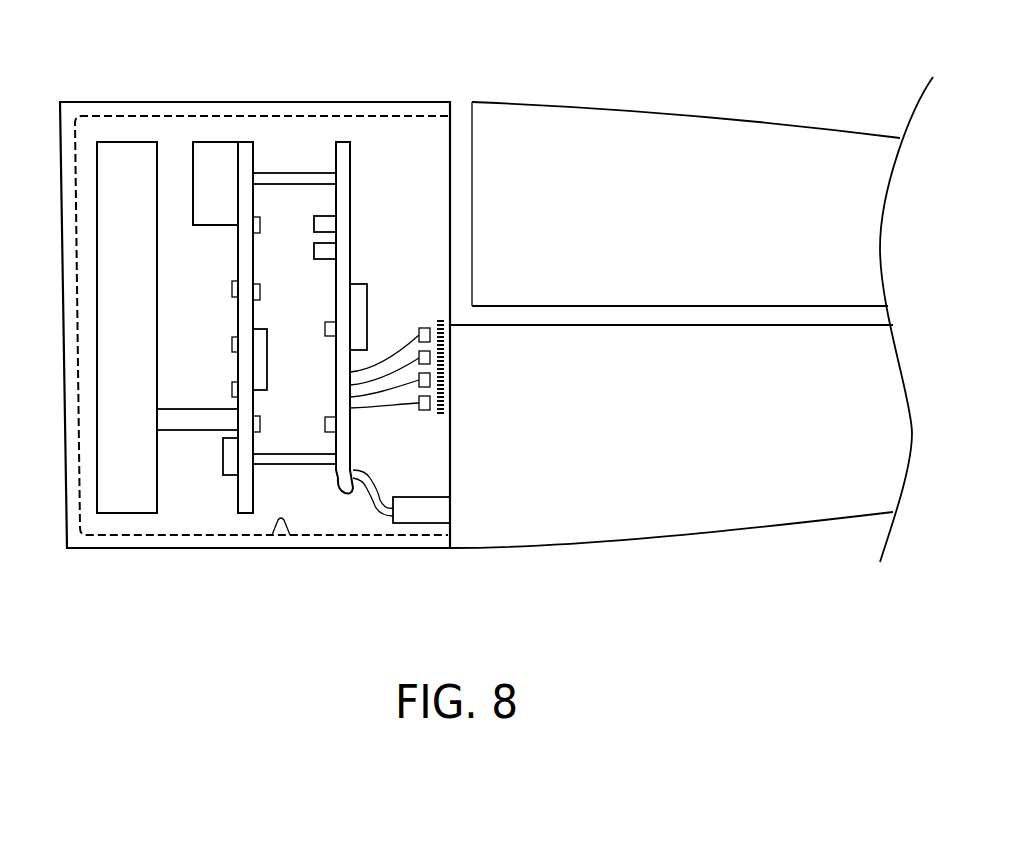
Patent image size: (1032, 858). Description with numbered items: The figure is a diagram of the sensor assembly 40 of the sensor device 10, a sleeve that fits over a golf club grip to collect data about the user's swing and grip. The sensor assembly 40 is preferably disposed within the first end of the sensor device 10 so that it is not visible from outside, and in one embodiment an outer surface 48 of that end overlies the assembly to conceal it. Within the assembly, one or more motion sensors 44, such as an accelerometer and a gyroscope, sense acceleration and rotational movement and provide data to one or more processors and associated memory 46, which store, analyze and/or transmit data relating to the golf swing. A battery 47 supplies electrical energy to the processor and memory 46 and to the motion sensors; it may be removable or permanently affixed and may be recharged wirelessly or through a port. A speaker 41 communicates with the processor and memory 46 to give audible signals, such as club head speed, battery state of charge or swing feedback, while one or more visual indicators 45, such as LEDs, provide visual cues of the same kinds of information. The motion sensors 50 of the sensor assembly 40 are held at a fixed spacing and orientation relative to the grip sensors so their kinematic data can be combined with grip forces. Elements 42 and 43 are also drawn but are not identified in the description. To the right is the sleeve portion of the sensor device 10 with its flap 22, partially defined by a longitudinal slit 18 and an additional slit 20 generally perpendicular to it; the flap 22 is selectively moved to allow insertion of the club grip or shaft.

The sensor device 10 is at (752, 66).
The slit 18 is at (773, 318).
The slit 20 is at (462, 135).
The flap 22 is at (257, 98).
The sensor assembly 40 is at (203, 361).
The speaker 41 is at (197, 145).
The module housing 42 is at (73, 108).
The component block 43 is at (232, 462).
The motion sensors 44 is at (360, 330).
The visual indicators 45 is at (413, 272).
The processors and associated memory 46 is at (263, 327).
The battery 47 is at (130, 495).
The outer surface 48 is at (340, 550).
The motion sensors 50 is at (417, 508).